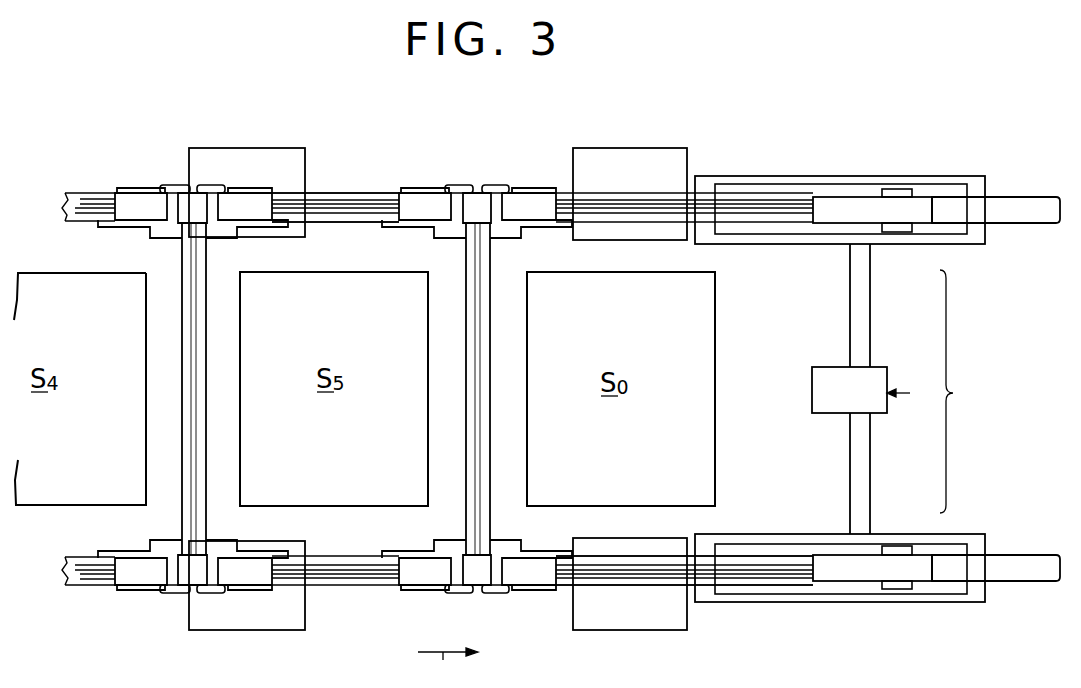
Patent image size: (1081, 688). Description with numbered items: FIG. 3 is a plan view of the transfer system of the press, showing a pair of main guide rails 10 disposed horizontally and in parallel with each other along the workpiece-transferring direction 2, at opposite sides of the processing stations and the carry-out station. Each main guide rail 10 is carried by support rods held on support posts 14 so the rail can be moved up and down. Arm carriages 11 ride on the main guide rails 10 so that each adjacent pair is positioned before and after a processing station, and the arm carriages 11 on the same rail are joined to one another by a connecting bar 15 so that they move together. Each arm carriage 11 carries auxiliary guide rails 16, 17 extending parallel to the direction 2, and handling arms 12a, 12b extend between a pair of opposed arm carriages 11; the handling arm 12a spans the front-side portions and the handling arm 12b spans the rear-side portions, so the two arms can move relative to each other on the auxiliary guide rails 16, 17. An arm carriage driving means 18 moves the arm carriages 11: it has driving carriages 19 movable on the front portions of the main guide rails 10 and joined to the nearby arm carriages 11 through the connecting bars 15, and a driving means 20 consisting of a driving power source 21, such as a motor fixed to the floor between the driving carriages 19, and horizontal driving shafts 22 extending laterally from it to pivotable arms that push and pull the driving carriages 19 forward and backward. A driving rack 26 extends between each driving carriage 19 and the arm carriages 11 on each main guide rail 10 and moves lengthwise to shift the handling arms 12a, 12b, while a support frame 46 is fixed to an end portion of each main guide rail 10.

The workpiece-transferring direction 2 is at (448, 668).
The main guide rail 10 is at (1022, 197).
The arm carriage 11 is at (148, 196).
The handling arm 12a is at (206, 252).
The handling arm 12b is at (182, 252).
The support post 14 is at (279, 150).
The connecting bar 15 is at (87, 210).
The auxiliary guide rail 16 is at (241, 193).
The auxiliary guide rail 17 is at (278, 228).
The arm carriage driving means 18 is at (964, 391).
The driving carriage 19 is at (914, 225).
The driving means 20 is at (915, 395).
The driving power source 21 is at (812, 392).
The horizontal driving shaft 22 is at (850, 310).
The driving rack 26 is at (344, 202).
The support frame 46 is at (860, 177).